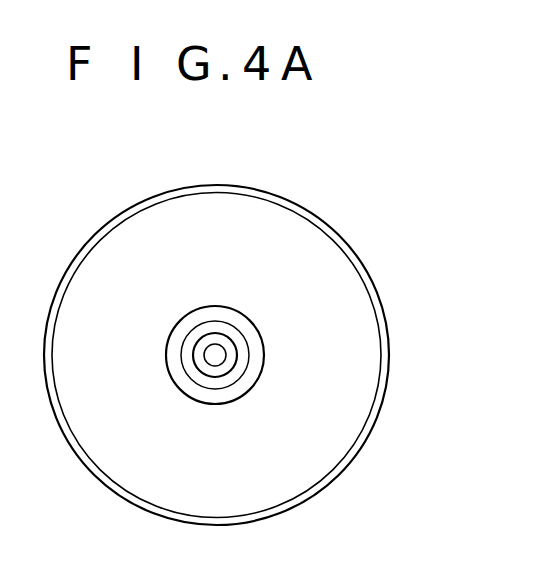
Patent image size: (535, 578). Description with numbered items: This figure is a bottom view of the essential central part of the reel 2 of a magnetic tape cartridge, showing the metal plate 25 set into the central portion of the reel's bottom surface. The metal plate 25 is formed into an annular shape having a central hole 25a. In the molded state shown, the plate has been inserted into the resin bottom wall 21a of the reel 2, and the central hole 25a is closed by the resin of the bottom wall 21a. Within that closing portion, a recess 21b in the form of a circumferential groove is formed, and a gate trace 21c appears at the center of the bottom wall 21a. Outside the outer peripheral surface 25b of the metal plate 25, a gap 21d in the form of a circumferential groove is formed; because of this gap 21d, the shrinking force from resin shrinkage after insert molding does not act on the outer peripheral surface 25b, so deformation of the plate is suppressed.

The reel 2 is at (72, 211).
The metal plate 25 is at (260, 222).
The central hole 25a is at (190, 316).
The outer peripheral surface 25b is at (112, 480).
The bottom wall 21a is at (238, 322).
The recess 21b is at (246, 358).
The gate trace 21c is at (205, 358).
The gap 21d is at (368, 424).